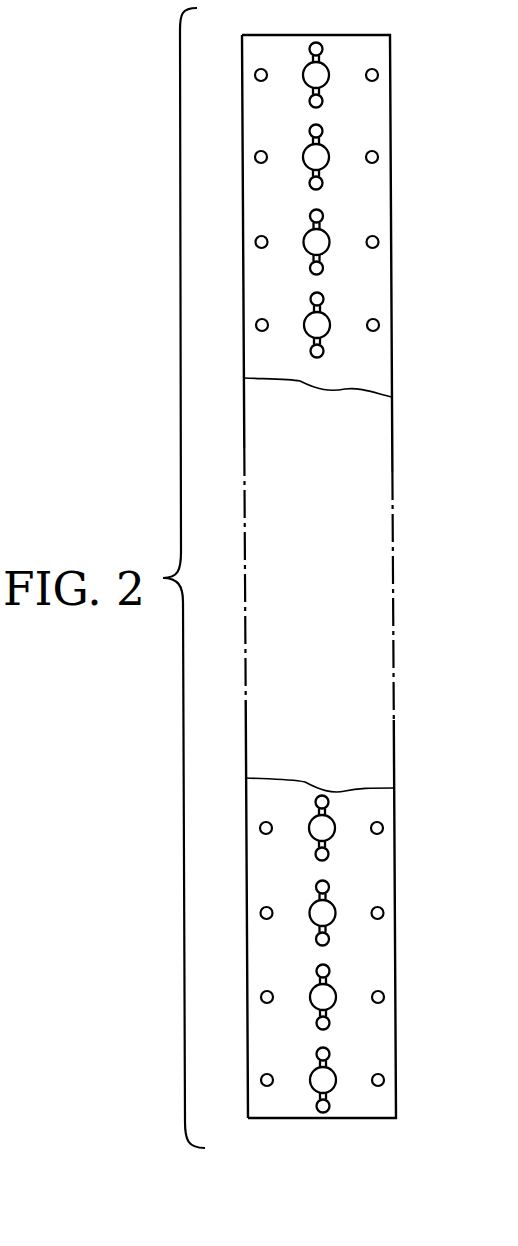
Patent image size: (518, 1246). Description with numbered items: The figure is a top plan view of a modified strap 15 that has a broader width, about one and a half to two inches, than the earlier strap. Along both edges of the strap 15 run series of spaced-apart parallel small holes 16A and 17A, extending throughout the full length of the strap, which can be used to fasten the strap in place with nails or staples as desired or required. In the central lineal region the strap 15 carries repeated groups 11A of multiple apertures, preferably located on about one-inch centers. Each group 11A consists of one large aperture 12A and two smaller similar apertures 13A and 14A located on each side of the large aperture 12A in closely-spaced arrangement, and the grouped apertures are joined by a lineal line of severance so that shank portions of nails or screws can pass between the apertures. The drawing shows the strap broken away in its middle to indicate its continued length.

The group of multiple apertures 11A is at (306, 338).
The large aperture 12A is at (333, 989).
The smaller aperture 13A is at (330, 1052).
The smaller aperture 14A is at (329, 1103).
The strap 15 is at (395, 304).
The small hole 16A is at (377, 152).
The left side mounting hole 17A is at (259, 236).